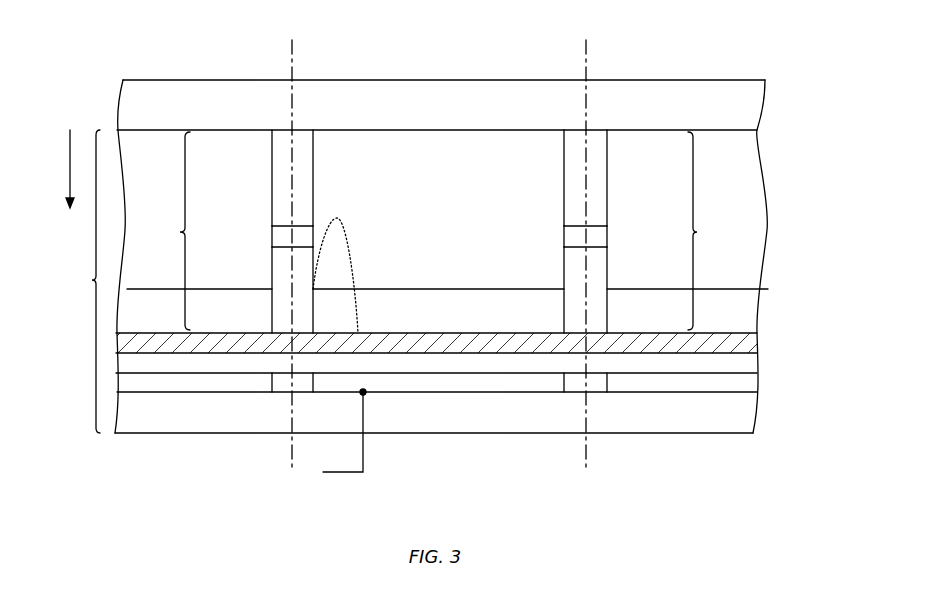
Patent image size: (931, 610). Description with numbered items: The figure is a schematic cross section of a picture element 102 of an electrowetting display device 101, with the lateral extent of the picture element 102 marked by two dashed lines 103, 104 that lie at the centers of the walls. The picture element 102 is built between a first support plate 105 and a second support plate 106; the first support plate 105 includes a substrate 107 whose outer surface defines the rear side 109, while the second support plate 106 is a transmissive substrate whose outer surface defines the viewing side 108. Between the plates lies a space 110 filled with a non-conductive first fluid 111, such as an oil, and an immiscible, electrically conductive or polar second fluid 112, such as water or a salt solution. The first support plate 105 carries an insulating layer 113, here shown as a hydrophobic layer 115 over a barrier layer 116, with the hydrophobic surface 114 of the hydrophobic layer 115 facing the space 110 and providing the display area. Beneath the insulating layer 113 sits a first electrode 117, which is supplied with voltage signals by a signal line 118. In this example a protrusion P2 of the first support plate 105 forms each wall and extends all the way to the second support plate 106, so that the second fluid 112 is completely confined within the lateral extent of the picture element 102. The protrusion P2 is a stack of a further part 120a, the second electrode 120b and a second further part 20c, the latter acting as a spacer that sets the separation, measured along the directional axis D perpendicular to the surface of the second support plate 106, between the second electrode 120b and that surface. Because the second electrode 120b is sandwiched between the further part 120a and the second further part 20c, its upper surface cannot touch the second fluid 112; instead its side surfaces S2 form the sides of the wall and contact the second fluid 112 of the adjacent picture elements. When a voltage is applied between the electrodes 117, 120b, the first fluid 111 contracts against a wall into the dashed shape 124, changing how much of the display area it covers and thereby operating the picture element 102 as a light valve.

The electrowetting display device 101 is at (803, 19).
The picture element 102 is at (456, 19).
The dashed line 103 is at (292, 50).
The dashed line 104 is at (586, 50).
The first support plate 105 is at (74, 281).
The second support plate 106 is at (760, 105).
The substrate 107 is at (672, 417).
The viewing side 108 is at (393, 80).
The rear side 109 is at (437, 433).
The space 110 is at (487, 143).
The first fluid 111 is at (388, 298).
The second fluid 112 is at (764, 197).
The insulating layer 113 is at (772, 333).
The hydrophobic surface 114 is at (522, 333).
The hydrophobic layer 115 is at (478, 343).
The barrier layer 116 is at (432, 363).
The first electrode 117 is at (499, 385).
The signal line 118 is at (341, 472).
The second further part 20c is at (272, 172).
The further part 120a is at (272, 305).
The second electrode 120b is at (272, 235).
The dashed shape 124 is at (345, 223).
The surface of the second electrode S2 is at (314, 212).
The protrusion P2 is at (439, 231).
The directional axis D is at (61, 169).